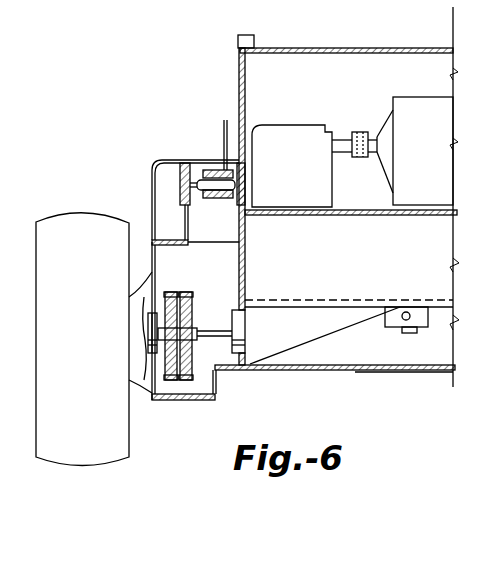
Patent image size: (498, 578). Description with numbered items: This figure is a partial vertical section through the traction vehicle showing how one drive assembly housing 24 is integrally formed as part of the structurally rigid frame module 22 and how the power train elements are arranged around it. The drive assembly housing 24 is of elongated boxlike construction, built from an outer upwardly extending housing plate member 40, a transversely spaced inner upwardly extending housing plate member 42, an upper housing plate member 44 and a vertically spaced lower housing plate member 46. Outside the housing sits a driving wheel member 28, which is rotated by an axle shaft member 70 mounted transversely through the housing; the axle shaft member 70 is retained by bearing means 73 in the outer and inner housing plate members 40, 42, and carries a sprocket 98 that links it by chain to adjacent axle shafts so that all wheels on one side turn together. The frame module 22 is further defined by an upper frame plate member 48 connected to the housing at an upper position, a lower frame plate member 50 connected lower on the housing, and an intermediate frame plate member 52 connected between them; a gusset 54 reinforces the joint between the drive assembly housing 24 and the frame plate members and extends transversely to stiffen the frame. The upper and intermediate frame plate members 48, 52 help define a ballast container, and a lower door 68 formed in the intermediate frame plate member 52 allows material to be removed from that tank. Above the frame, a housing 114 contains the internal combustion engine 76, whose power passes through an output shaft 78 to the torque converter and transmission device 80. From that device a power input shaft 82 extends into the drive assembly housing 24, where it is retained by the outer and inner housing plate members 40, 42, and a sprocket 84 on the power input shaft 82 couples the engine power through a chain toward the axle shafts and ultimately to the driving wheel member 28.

The frame module 22 is at (396, 371).
The housing 114 is at (336, 50).
The inner upwardly extending housing plate member 42 is at (246, 258).
The upper frame plate member 48 is at (437, 215).
The lower frame plate member 50 is at (300, 371).
The intermediate frame plate member 52 is at (387, 298).
The gusset 54 is at (313, 338).
The lower door 68 is at (426, 333).
The torque converter and transmission device 80 is at (287, 166).
The output shaft 78 is at (370, 134).
The internal combustion engine 76 is at (428, 176).
The drive assembly housing 24 is at (149, 161).
The upper housing plate member 44 is at (186, 163).
The power input shaft 82 is at (211, 171).
The sprocket 84 is at (225, 134).
The outer upwardly extending housing plate member 40 is at (150, 300).
The lower housing plate member 46 is at (212, 402).
The sprocket 98 is at (176, 304).
The axle shaft member 70 is at (212, 329).
The bearing means 73 is at (147, 328).
The driving wheel member 28 is at (89, 282).